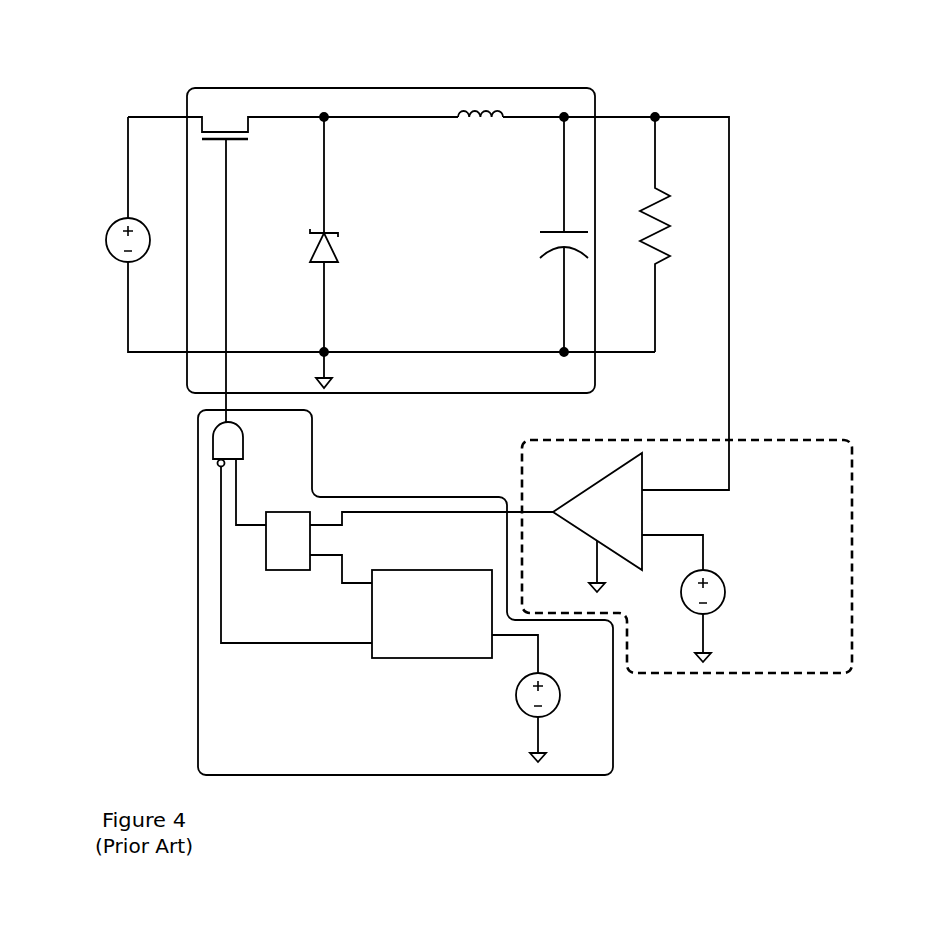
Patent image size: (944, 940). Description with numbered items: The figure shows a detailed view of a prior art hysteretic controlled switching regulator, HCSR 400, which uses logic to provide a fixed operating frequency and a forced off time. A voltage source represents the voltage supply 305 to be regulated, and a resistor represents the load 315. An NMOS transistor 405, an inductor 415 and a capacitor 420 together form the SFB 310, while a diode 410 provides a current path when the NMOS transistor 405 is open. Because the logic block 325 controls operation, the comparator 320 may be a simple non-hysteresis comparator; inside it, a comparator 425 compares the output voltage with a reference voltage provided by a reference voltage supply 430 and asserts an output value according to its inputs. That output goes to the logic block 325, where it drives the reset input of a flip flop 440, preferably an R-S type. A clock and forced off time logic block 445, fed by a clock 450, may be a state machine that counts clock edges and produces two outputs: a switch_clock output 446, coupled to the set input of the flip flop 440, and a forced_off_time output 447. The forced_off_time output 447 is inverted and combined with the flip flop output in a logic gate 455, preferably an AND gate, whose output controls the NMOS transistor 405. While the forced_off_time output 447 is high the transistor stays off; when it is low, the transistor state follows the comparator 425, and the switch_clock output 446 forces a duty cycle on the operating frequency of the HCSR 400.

The hysteretic controlled switching regulator 400 is at (730, 72).
The voltage supply 305 is at (114, 262).
The switching feedback block 310 is at (305, 88).
The load 315 is at (662, 190).
The comparator 320 is at (772, 440).
The logic block 325 is at (414, 497).
The NMOS transistor 405 is at (232, 146).
The diode 410 is at (336, 225).
The inductor 415 is at (480, 125).
The capacitor 420 is at (558, 228).
The comparator 425 is at (589, 487).
The reference voltage supply 430 is at (690, 615).
The flip flop 440 is at (295, 571).
The clock and forced off time logic block 445 is at (428, 570).
The switch_clock output 446 is at (358, 584).
The forced_off_time output 447 is at (340, 644).
The clock 450 is at (548, 675).
The logic gate 455 is at (244, 434).